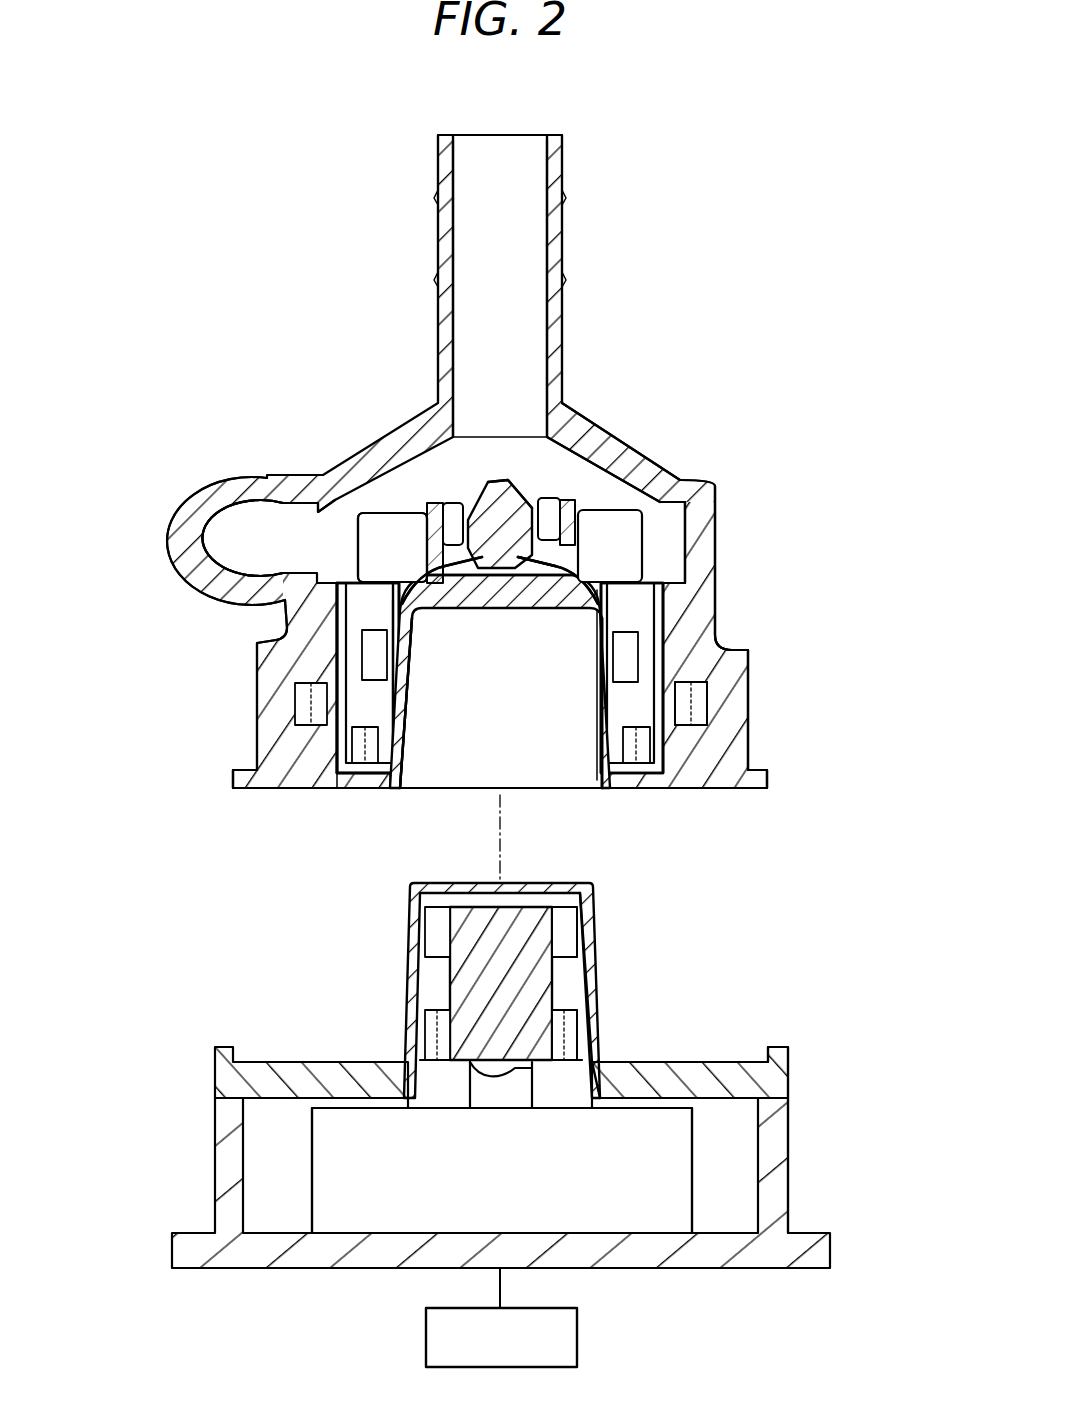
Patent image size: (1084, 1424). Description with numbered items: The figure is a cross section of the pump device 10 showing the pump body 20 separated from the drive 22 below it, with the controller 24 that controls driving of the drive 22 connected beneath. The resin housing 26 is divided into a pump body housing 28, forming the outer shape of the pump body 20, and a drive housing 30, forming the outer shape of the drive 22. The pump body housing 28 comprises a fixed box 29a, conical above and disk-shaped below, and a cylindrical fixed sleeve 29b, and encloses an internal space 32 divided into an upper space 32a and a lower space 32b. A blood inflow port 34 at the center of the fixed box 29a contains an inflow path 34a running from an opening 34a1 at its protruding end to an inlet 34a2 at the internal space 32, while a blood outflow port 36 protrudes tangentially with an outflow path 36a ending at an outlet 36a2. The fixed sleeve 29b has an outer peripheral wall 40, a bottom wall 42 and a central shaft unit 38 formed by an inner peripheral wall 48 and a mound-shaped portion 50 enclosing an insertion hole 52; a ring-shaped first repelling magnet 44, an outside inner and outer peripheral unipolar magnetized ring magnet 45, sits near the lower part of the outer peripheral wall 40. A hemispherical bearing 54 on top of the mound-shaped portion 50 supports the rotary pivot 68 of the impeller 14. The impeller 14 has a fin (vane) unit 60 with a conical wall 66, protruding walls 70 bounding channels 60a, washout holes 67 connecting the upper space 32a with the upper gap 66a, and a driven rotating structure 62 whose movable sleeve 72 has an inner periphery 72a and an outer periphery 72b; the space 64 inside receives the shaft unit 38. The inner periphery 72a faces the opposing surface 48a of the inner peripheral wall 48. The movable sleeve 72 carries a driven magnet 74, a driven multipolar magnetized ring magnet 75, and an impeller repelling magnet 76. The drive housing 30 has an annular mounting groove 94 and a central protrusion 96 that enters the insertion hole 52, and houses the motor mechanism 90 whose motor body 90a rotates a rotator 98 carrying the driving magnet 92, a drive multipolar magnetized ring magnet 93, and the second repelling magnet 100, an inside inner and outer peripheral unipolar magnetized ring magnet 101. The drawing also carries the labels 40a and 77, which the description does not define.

The pump device 10 is at (312, 231).
The impeller 14 is at (582, 488).
The pump body 20 is at (748, 462).
The drive 22 is at (800, 1062).
The controller 24 is at (426, 1339).
The housing 26 is at (508, 819).
The pump body housing 28 is at (760, 790).
The fixed box 29a is at (722, 517).
The fixed sleeve 29b is at (752, 758).
The drive housing 30 is at (773, 1045).
The internal space 32 is at (810, 604).
The upper space 32a is at (670, 560).
The lower space 32b is at (660, 657).
The blood inflow port 34 is at (560, 310).
The inflow path 34a is at (515, 238).
The opening 34a1 is at (540, 133).
The inlet 34a2 is at (545, 437).
The blood outflow port 36 is at (180, 575).
The outflow path 36a is at (225, 528).
The outlet 36a2 is at (292, 520).
The shaft unit 38 is at (568, 590).
The outer peripheral wall 40 is at (275, 705).
The yoke cylindrical portion 40a is at (345, 708).
The bottom wall 42 is at (356, 777).
The first repelling magnet 44 is at (700, 704).
The outside inner and outer peripheral unipolar magnetized ring magnet 45 is at (721, 710).
The inner peripheral wall 48 is at (603, 731).
The opposing surface 48a is at (612, 712).
The mound-shaped portion 50 is at (487, 597).
The insertion hole 52 is at (553, 770).
The bearing 54 is at (470, 515).
The fin (vane) unit 60 is at (408, 508).
The channel 60a is at (378, 556).
The driven rotating structure 62 is at (297, 678).
The space 64 is at (536, 617).
The conical wall 66 is at (412, 576).
The upper gap 66a is at (548, 572).
The washout holes 67 is at (536, 545).
The rotary pivot 68 is at (502, 480).
The protruding walls 70 is at (620, 520).
The movable sleeve 72 is at (337, 640).
The inner periphery 72a is at (398, 742).
The outer periphery 72b is at (337, 682).
The driven magnet 74 is at (390, 641).
The driven multipolar magnetized ring magnet 75 is at (410, 680).
The impeller repelling magnet 76 is at (640, 765).
The second stator coil 77 is at (632, 719).
The motor mechanism 90 is at (502, 1070).
The motor body 90a is at (648, 1213).
The driving magnet 92 is at (425, 912).
The drive multipolar magnetized ring magnet 93 is at (459, 932).
The annular mounting groove 94 is at (625, 1062).
The central protrusion 96 is at (593, 912).
The rotator 98 is at (543, 1087).
The second repelling magnet 100 is at (425, 1012).
The inside inner and outer peripheral unipolar magnetized ring magnet 101 is at (453, 1035).